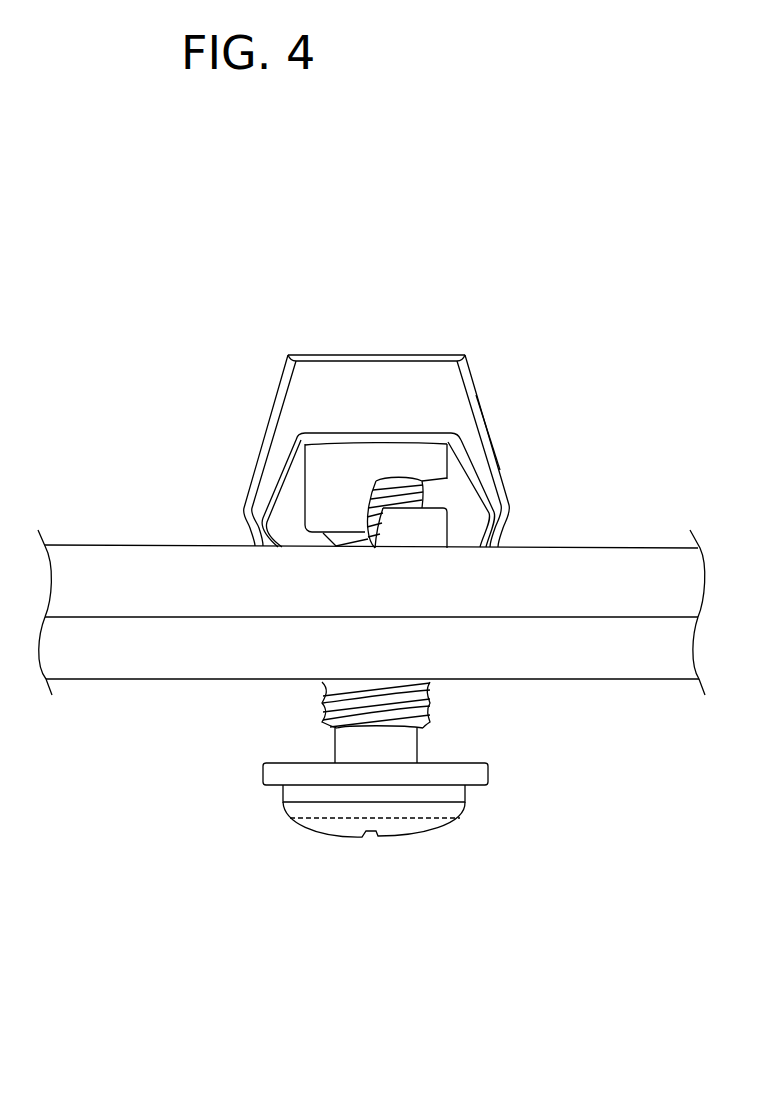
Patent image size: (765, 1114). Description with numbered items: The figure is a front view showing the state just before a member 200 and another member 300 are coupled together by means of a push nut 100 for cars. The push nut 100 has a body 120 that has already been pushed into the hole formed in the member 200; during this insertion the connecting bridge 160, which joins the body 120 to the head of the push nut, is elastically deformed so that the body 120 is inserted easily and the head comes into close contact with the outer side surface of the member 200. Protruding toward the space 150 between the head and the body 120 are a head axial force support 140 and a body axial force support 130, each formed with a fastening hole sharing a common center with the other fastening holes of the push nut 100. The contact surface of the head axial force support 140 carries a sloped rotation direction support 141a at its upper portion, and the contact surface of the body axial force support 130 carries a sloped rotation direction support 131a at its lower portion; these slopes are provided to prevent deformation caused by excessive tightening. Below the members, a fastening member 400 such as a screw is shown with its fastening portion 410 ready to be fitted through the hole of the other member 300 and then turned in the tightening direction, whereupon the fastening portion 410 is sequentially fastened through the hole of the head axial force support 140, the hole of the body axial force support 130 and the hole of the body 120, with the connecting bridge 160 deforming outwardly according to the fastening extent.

The push nut 100 is at (272, 309).
The body 120 is at (410, 355).
The body axial force support 130 is at (433, 527).
The rotation direction support 131a is at (372, 548).
The head axial force support 140 is at (338, 503).
The rotation direction support 141a is at (385, 487).
The space 150 is at (467, 503).
The connecting bridge 160 is at (510, 508).
The member 200 is at (110, 560).
The another member 300 is at (115, 655).
The fastening member 400 is at (413, 808).
The fastening portion 410 is at (323, 703).